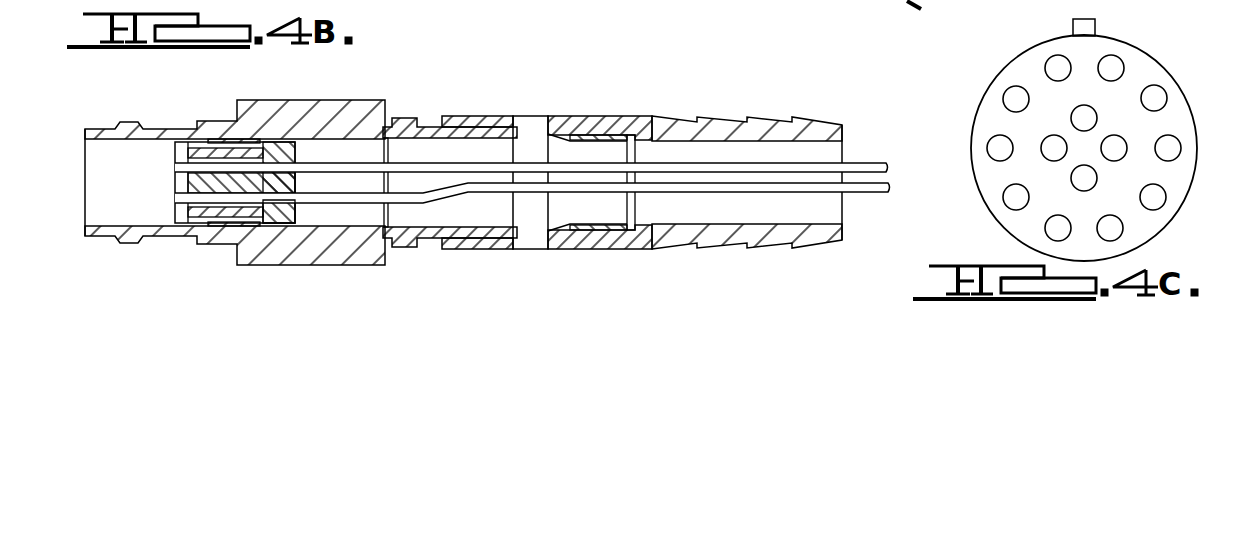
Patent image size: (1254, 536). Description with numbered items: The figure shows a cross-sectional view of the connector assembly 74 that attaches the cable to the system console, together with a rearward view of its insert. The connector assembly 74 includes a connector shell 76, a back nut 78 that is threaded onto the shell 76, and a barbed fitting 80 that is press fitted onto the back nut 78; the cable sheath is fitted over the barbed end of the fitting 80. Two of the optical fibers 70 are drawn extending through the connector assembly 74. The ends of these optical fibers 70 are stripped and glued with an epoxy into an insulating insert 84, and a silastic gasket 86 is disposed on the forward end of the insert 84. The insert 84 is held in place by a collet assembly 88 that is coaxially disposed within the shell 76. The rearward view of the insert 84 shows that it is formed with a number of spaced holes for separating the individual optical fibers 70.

In FIG. 4B, the optical fibers 70 is at (873, 183).
In FIG. 4B, the connector assembly 74 is at (507, 74).
In FIG. 4B, the connector shell 76 is at (253, 108).
In FIG. 4B, the back nut 78 is at (524, 118).
In FIG. 4B, the barbed fitting 80 is at (713, 122).
In FIG. 4B, the insulating insert 84 is at (281, 216).
In FIG. 4C, the insulating insert 84 is at (1175, 69).
In FIG. 4B, the silastic gasket 86 is at (178, 216).
In FIG. 4B, the collet assembly 88 is at (430, 137).